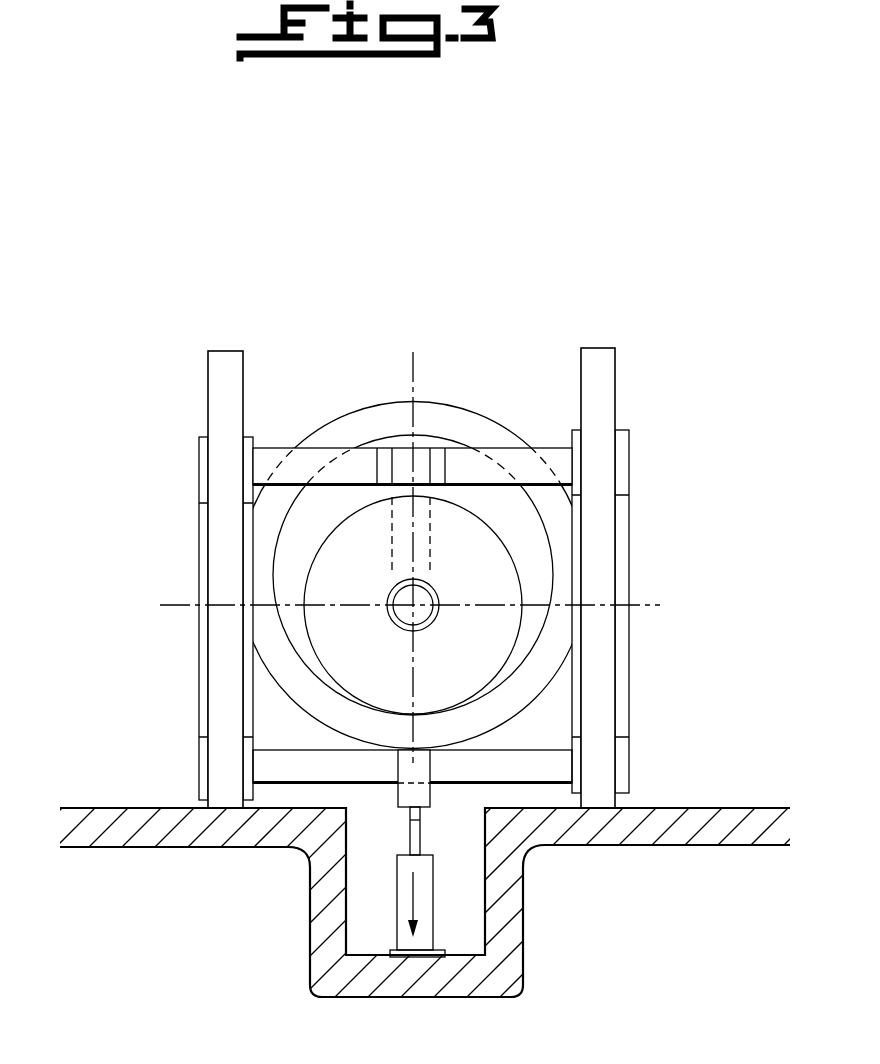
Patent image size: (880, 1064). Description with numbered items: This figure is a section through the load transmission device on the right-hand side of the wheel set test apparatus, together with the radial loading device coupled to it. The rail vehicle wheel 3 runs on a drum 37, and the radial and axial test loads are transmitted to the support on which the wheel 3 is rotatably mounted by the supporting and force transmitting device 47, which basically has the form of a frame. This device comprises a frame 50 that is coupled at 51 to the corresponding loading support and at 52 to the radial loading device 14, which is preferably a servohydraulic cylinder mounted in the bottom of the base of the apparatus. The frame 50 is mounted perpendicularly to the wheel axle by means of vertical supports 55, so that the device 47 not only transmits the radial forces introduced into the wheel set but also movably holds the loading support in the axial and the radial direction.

The rail vehicle wheel 3 is at (492, 663).
The radial loading device 14 is at (440, 905).
The drum 37 is at (313, 698).
The supporting and force transmitting device 47 is at (191, 678).
The frame 50 is at (260, 436).
The coupling to loading support 51 is at (420, 458).
The coupling to radial loading device 52 is at (410, 790).
The vertical support 55 is at (208, 476).